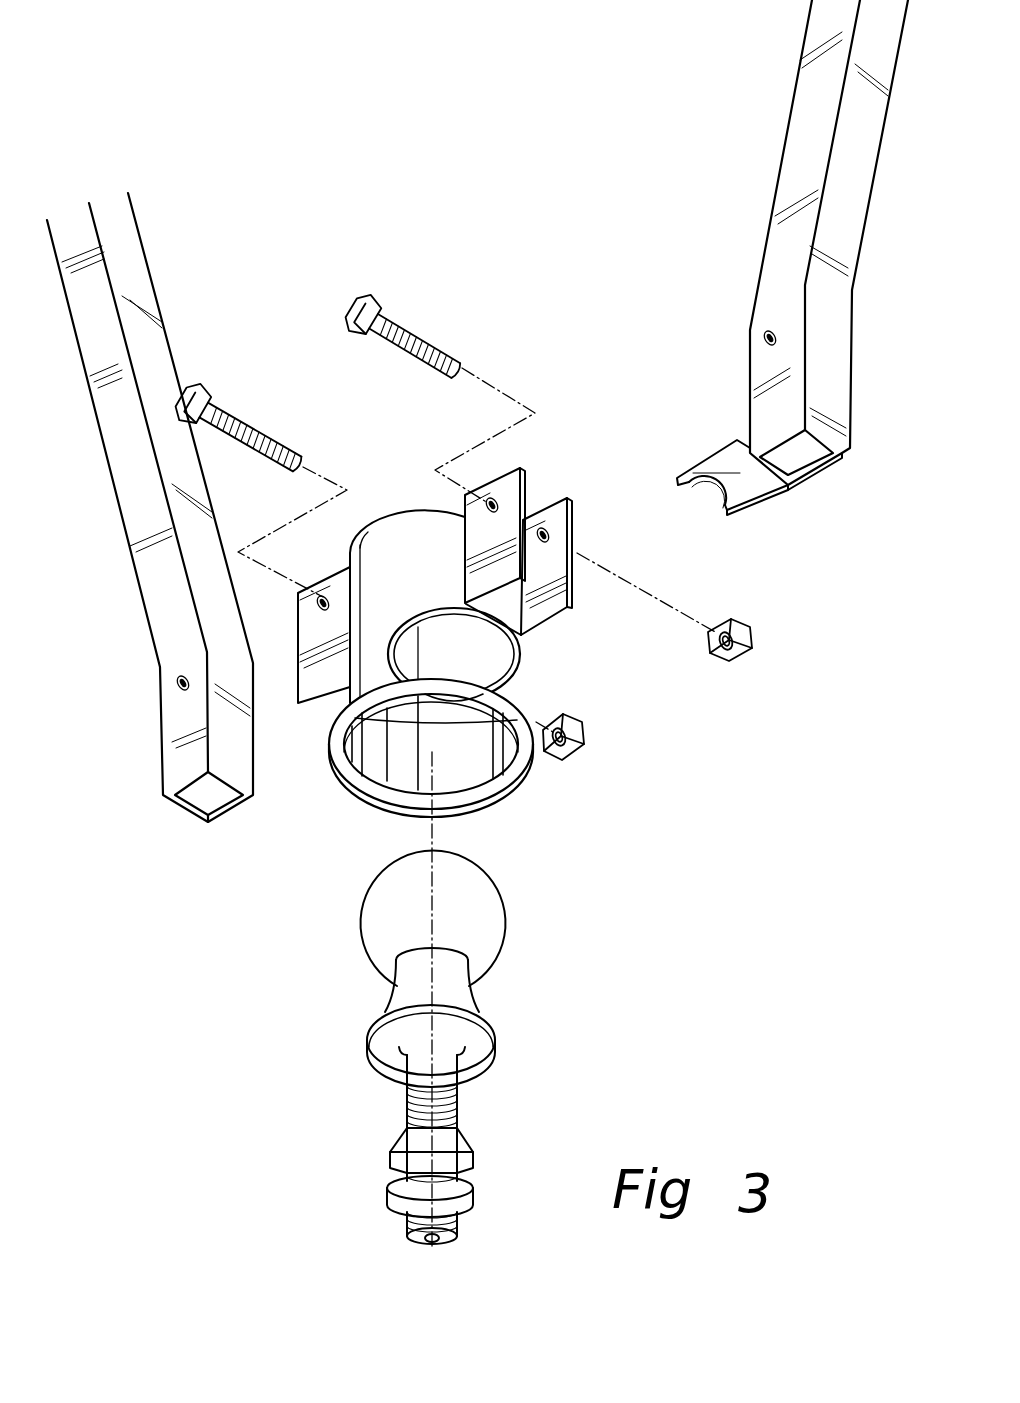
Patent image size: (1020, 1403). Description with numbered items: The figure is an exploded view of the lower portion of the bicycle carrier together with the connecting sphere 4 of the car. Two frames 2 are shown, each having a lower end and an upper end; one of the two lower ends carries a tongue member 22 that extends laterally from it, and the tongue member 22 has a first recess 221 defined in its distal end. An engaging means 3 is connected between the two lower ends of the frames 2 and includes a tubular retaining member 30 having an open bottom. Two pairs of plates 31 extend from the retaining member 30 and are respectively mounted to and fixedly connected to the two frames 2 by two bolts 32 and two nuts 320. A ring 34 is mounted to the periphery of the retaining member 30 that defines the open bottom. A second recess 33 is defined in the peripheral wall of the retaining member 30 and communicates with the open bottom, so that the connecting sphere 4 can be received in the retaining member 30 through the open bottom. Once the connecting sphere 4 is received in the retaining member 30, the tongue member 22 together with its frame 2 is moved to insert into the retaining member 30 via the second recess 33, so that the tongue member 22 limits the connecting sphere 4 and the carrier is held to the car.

The frame 2 is at (137, 578).
The tongue member 22 is at (762, 492).
The first recess 221 is at (698, 500).
The engaging means 3 is at (442, 653).
The tubular retaining member 30 is at (400, 525).
The plates 31 is at (302, 707).
The bolt 32 is at (418, 330).
The nut 320 is at (751, 643).
The second recess 33 is at (490, 668).
The ring 34 is at (517, 764).
The connecting sphere 4 is at (495, 925).